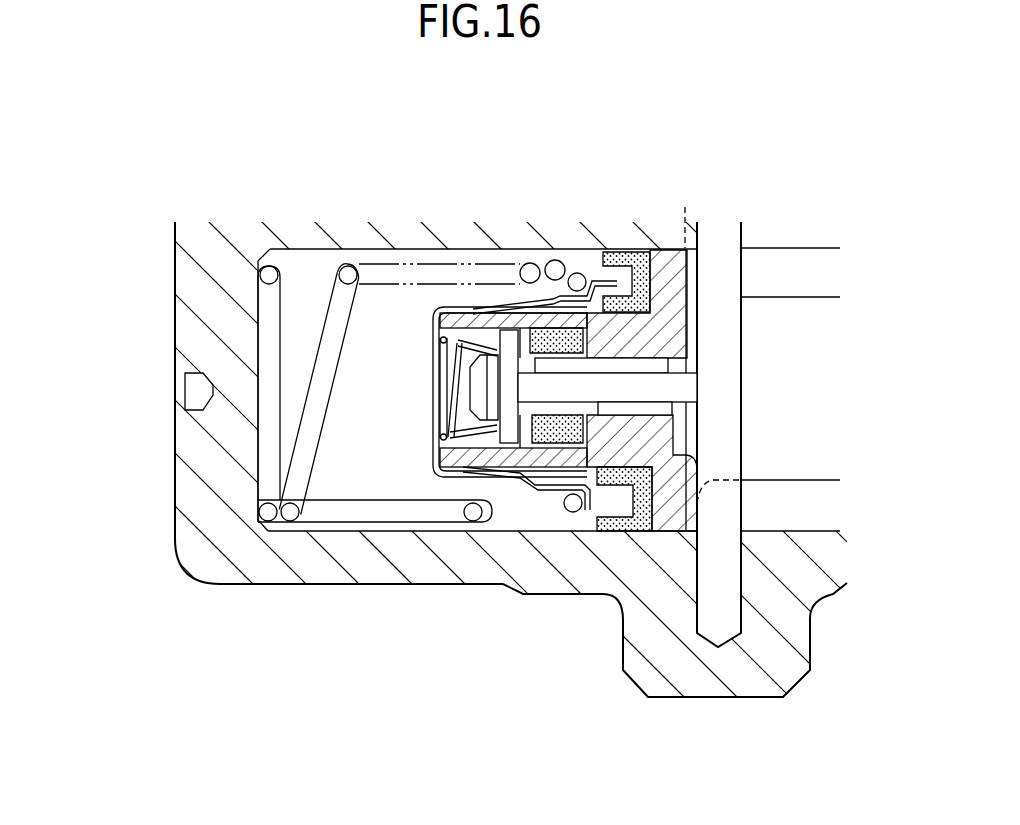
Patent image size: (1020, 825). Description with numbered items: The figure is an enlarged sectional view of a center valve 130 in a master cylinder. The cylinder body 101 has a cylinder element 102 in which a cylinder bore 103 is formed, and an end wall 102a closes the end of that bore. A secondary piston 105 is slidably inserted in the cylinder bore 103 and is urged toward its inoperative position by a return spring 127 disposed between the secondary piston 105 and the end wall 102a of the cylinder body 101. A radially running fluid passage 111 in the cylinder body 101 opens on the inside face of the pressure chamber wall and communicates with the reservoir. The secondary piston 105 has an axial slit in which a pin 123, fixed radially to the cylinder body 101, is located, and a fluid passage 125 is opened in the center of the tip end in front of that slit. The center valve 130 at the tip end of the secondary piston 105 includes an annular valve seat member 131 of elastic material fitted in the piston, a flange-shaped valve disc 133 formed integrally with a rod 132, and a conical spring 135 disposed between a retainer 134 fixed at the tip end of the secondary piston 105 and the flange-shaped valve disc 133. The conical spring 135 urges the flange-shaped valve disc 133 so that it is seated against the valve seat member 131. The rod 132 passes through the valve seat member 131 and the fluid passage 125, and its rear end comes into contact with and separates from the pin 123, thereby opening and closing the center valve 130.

The cylinder body 101 is at (486, 588).
The cylinder element 102 is at (335, 562).
The end wall 102a is at (200, 458).
The cylinder bore 103 is at (568, 522).
The secondary piston 105 is at (663, 250).
The fluid passage 111 is at (730, 248).
The pin 123 is at (727, 603).
The fluid passage 125 is at (665, 525).
The return spring 127 is at (290, 512).
The center valve 130 is at (476, 492).
The annular valve seat member 131 is at (558, 350).
The rod 132 is at (630, 385).
The flange-shaped valve disc 133 is at (472, 332).
The retainer 134 is at (440, 307).
The conical spring 135 is at (477, 337).